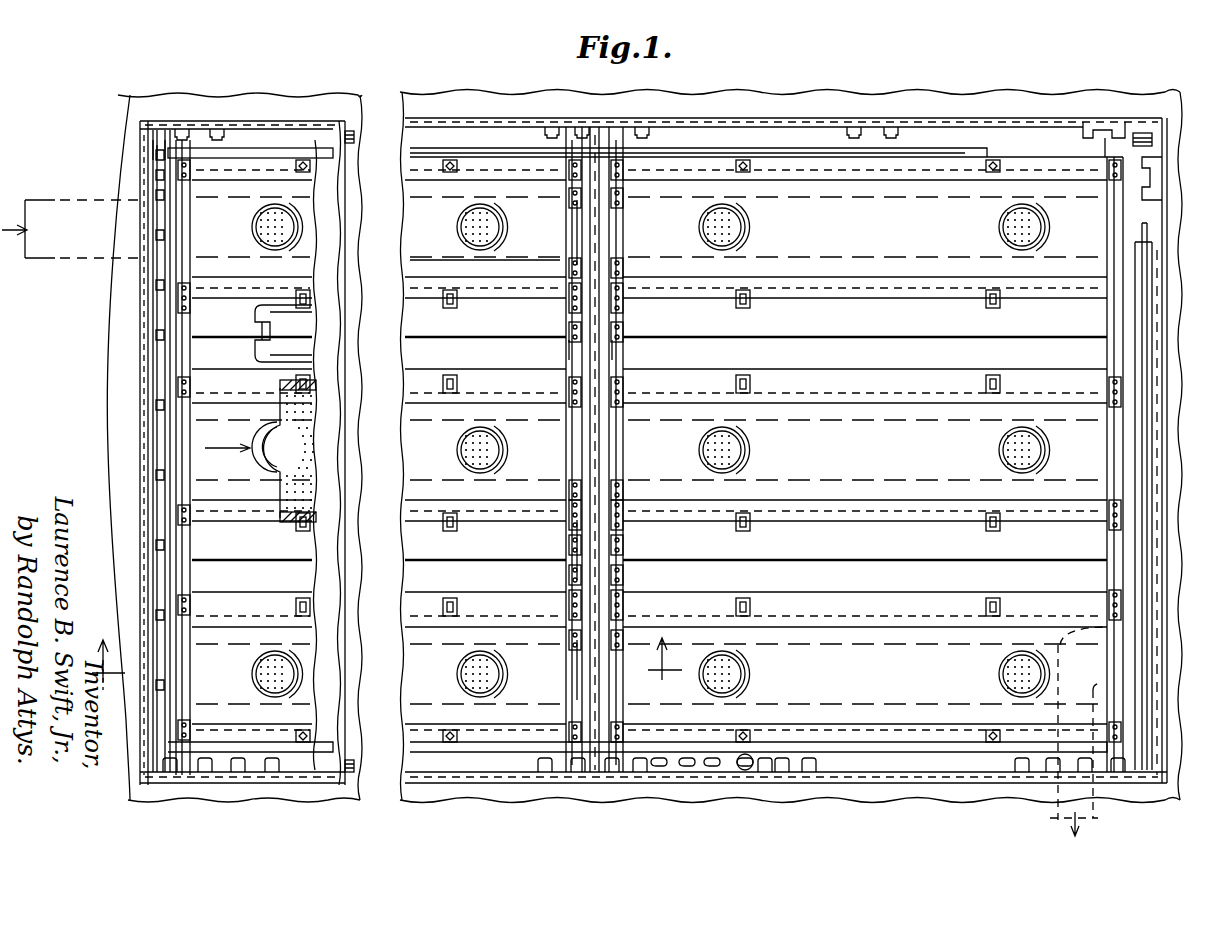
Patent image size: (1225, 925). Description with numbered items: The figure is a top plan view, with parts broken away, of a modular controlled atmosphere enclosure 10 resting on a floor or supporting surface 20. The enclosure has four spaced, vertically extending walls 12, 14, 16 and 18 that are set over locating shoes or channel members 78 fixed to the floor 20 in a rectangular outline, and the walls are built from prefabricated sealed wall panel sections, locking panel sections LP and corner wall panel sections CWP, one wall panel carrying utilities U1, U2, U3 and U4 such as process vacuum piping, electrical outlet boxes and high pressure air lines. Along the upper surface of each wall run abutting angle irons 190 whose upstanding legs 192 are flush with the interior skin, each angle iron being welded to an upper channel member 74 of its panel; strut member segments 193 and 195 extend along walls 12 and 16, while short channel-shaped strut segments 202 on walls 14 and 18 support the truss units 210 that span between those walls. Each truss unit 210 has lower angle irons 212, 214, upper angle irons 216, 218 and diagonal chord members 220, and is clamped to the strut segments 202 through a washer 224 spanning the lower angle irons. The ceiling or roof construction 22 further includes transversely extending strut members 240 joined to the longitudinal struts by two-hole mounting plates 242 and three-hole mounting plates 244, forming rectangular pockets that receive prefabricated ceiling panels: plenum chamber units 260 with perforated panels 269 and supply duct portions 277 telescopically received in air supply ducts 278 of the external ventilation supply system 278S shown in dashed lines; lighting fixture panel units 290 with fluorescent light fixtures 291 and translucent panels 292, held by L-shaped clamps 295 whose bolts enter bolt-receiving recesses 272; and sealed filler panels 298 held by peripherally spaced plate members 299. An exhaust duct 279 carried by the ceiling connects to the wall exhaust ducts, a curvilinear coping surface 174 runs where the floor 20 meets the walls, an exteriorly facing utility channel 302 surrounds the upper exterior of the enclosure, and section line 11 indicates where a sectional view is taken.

The modular controlled atmosphere enclosure 10 is at (1132, 76).
The section line 11 is at (387, 670).
The wall 12 is at (128, 314).
The wall 14 is at (365, 128).
The wall 16 is at (1177, 322).
The wall 18 is at (406, 768).
The floor or supporting surface 20 is at (272, 100).
The modular ceiling or overhead roof construction 22 is at (382, 236).
The upper channel member 74 is at (1160, 217).
The locating shoe or channel member 78 is at (349, 130).
The exposed curvilinear surface 174 is at (320, 650).
The angle iron 190 is at (180, 356).
The upstanding leg 192 is at (960, 156).
The strut member segment 193 is at (188, 204).
The strut member segment 195 is at (1112, 228).
The short channel-shaped strut segment 202 is at (1144, 132).
The support truss unit 210 is at (592, 126).
The lower angle iron 212 is at (156, 140).
The lower angle iron 214 is at (170, 138).
The upper angle iron 216 is at (570, 350).
The upper angle iron 218 is at (612, 350).
The diagonally extending chord member 220 is at (1145, 236).
The washer 224 is at (160, 152).
The transversely extending strut member 240 is at (572, 250).
The two-hole mounting plate 242 is at (194, 166).
The three-hole mounting plate 244 is at (192, 398).
The plenum chamber unit 260 is at (320, 225).
The perforated panel 269 is at (262, 234).
The bolt-receiving recess 272 is at (303, 160).
The supply duct portion 277 is at (252, 244).
The air supply duct 278 is at (50, 200).
The external ventilation supply system 278S is at (62, 196).
The exhaust duct 279 is at (1056, 822).
The lighting fixture panel unit 290 is at (326, 364).
The fluorescent light fixture 291 is at (276, 346).
The translucent panel 292 is at (302, 324).
The L-shaped clamp 295 is at (312, 300).
The filler panel 298 is at (578, 234).
The plate member 299 is at (578, 200).
The exteriorly facing utility channel 302 is at (790, 117).
The corner wall panel section CWP is at (205, 138).
The locking panel section LP is at (1092, 124).
The utility U1 is at (745, 770).
The utility U2 is at (712, 768).
The utility U3 is at (687, 768).
The utility U4 is at (658, 768).